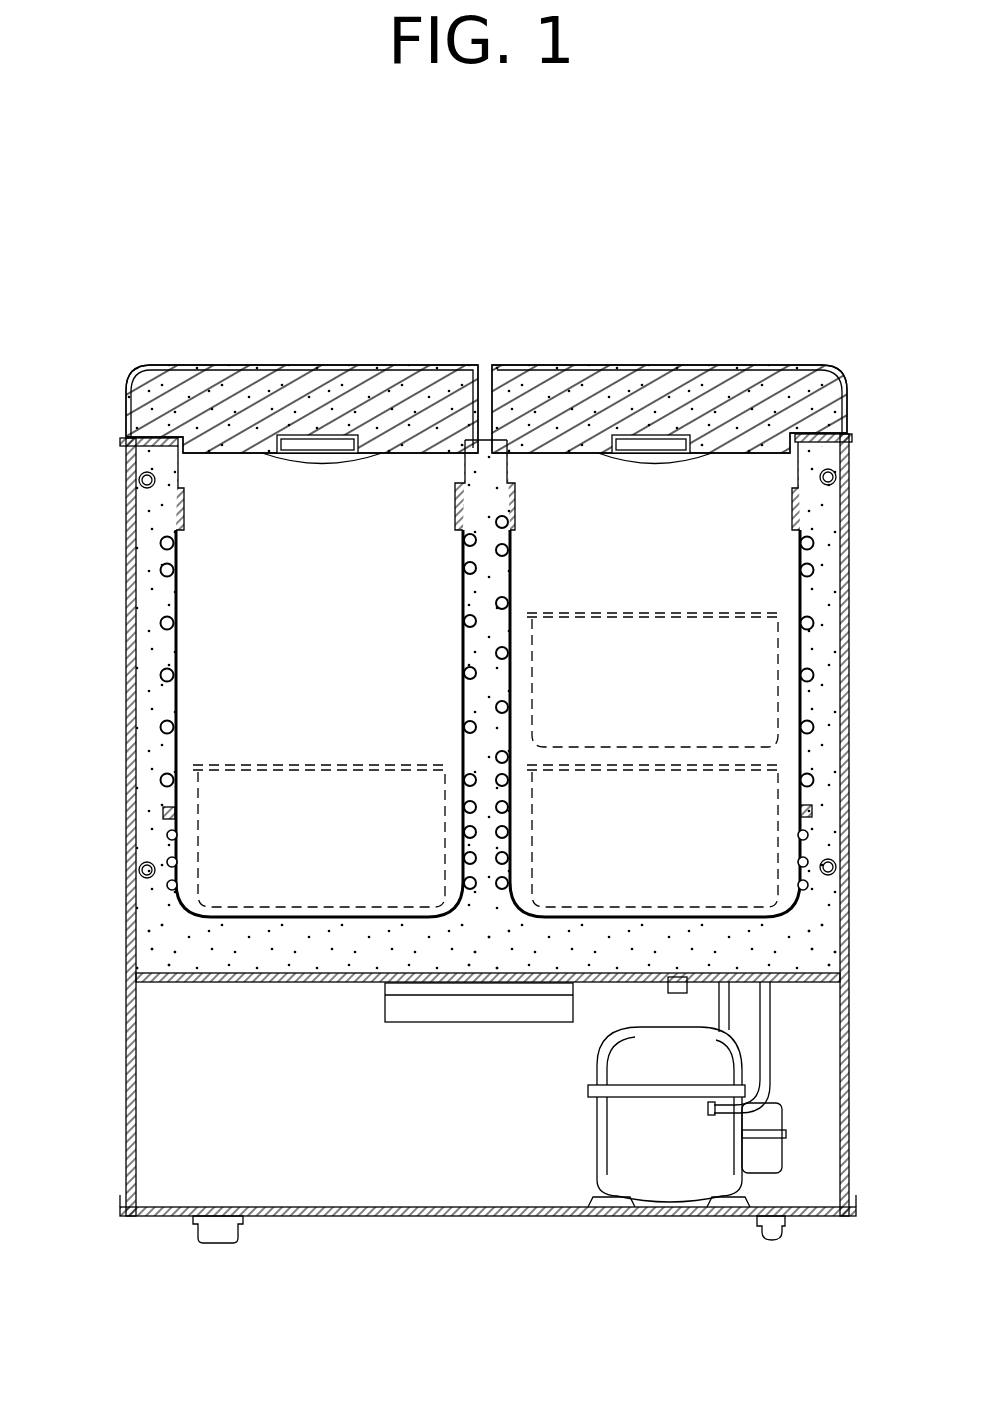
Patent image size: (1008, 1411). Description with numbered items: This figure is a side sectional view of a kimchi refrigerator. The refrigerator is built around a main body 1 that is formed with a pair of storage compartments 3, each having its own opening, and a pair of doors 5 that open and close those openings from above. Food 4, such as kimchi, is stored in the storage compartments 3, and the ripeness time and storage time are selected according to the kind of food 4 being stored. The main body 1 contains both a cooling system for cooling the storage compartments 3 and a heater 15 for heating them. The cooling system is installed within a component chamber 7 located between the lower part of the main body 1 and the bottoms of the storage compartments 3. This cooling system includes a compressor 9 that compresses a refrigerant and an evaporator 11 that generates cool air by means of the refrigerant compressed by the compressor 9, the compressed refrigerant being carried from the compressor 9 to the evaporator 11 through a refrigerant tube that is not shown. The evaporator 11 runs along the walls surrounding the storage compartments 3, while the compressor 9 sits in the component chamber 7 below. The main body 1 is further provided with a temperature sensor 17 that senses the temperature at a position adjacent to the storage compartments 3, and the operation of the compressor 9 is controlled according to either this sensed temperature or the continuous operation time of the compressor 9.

The main body 1 is at (130, 929).
The storage compartment 3 is at (250, 500).
The food 4 is at (262, 780).
The door 5 is at (664, 392).
The component chamber 7 is at (252, 1088).
The compressor 9 is at (672, 1170).
The evaporator 11 is at (163, 574).
The heater 15 is at (168, 835).
The temperature sensor 17 is at (163, 812).